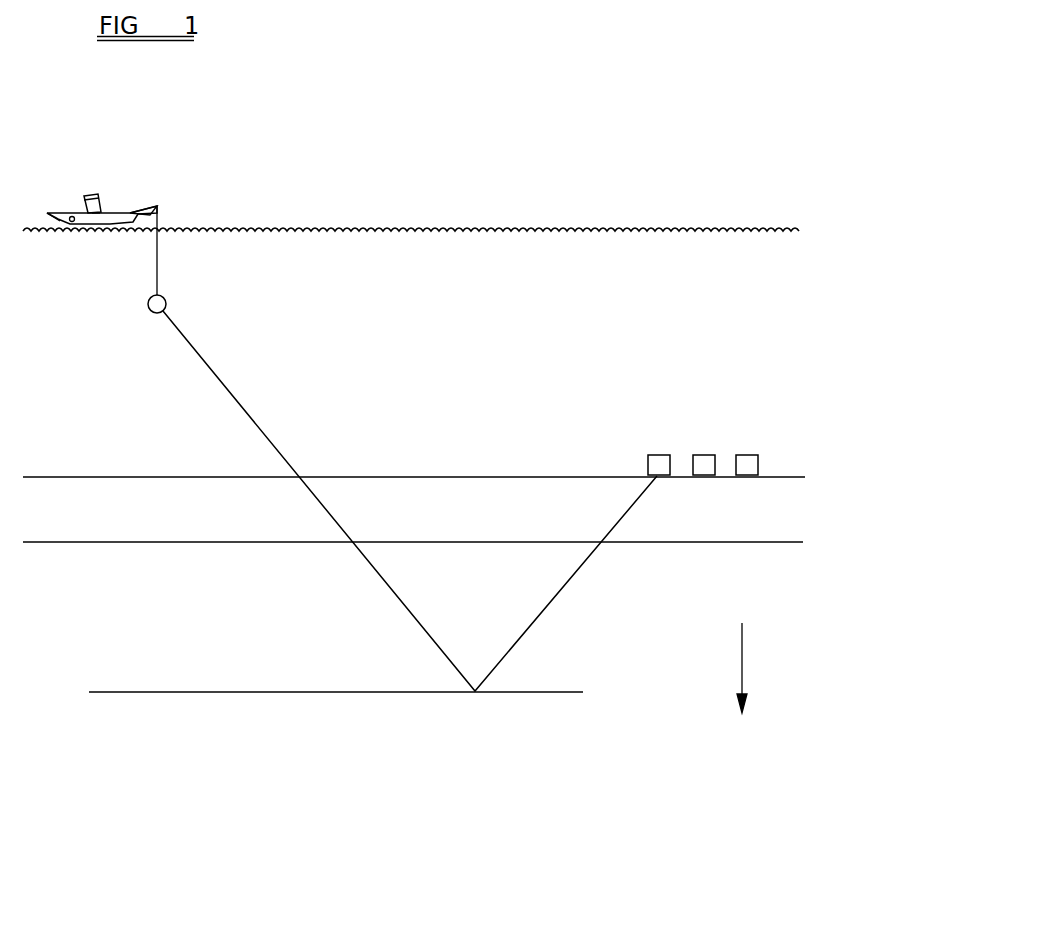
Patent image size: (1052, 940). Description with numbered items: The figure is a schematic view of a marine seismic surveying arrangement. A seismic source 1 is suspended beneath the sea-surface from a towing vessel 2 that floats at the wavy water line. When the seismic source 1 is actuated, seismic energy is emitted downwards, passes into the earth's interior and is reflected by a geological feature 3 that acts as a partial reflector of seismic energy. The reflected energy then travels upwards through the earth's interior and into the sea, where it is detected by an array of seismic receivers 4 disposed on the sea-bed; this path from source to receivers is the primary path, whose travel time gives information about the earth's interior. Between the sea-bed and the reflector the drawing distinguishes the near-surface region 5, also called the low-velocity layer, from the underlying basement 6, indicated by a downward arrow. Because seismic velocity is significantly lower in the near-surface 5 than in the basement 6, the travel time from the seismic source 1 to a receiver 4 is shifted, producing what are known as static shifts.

The seismic source 1 is at (148, 305).
The towing vessel 2 is at (88, 230).
The geological feature 3 is at (148, 693).
The seismic receivers 4 is at (745, 455).
The near-surface region 5 is at (442, 509).
The basement 6 is at (743, 635).